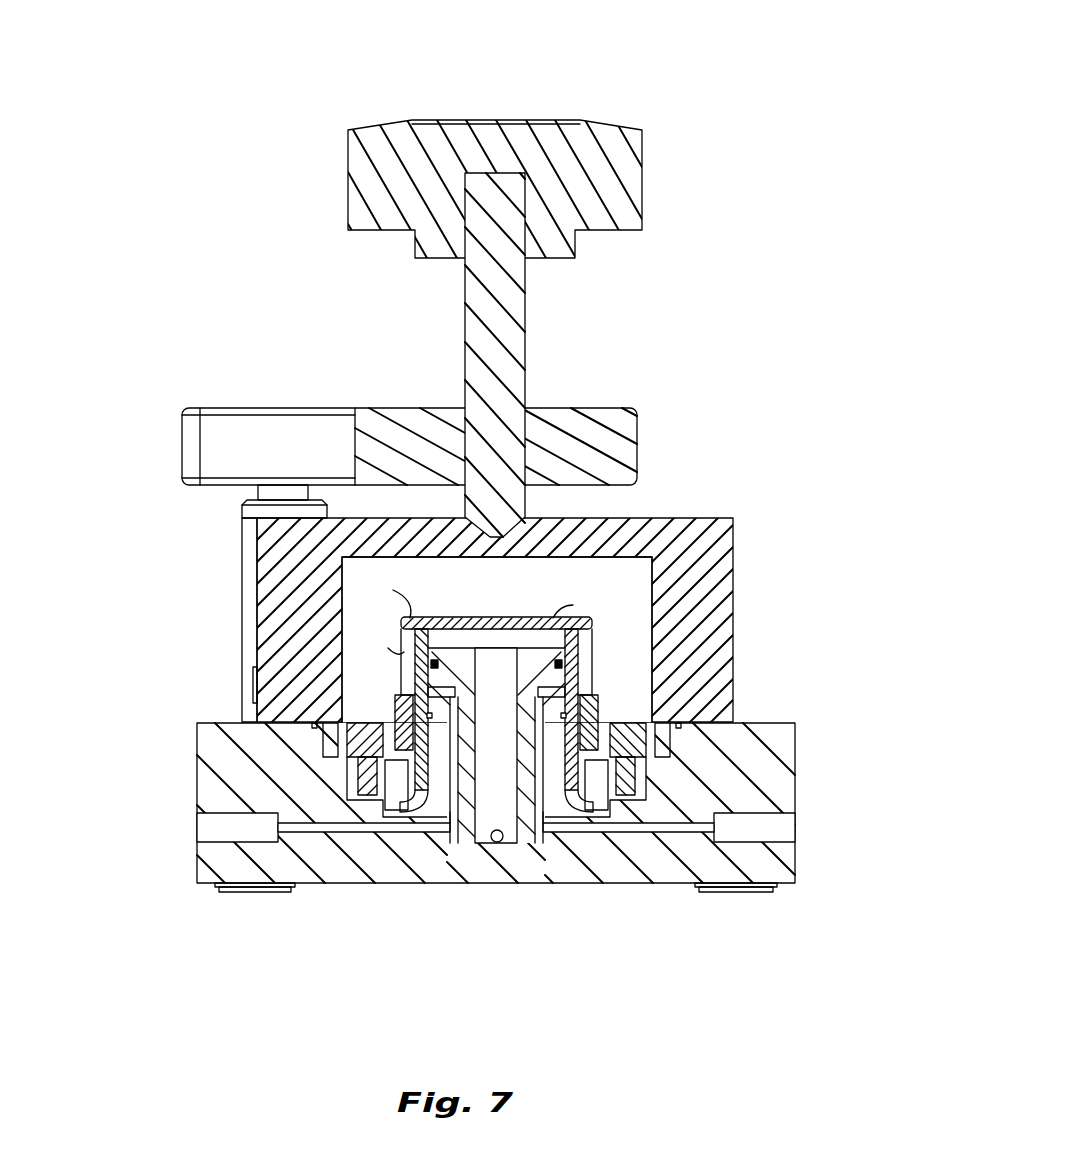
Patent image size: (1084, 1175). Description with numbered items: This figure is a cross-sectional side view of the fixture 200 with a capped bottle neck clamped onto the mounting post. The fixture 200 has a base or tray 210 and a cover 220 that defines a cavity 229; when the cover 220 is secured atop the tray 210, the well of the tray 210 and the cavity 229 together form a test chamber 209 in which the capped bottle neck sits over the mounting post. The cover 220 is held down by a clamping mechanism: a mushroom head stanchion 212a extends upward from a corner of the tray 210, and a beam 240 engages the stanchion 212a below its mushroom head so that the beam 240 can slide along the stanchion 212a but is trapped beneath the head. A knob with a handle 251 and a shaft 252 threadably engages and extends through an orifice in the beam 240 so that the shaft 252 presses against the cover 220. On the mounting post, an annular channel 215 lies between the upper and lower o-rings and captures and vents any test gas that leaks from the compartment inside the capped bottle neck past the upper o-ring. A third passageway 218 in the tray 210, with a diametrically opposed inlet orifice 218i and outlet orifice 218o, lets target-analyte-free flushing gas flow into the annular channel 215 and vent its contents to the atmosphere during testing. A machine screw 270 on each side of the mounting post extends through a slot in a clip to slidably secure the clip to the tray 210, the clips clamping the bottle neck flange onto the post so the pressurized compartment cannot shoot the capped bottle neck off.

The fixture 200 is at (672, 95).
The handle 251 is at (363, 168).
The shaft 252 is at (515, 318).
The beam 240 is at (596, 410).
The mushroom head stanchion 212a is at (246, 552).
The cover 220 is at (687, 522).
The cavity 229 is at (363, 615).
The test chamber 209 is at (613, 630).
The annular channel 215 is at (413, 693).
The machine screw 270 is at (362, 787).
The third passageway 218 is at (455, 820).
The outlet orifice 218o is at (188, 833).
The inlet orifice 218i is at (806, 833).
The tray 210 is at (785, 766).